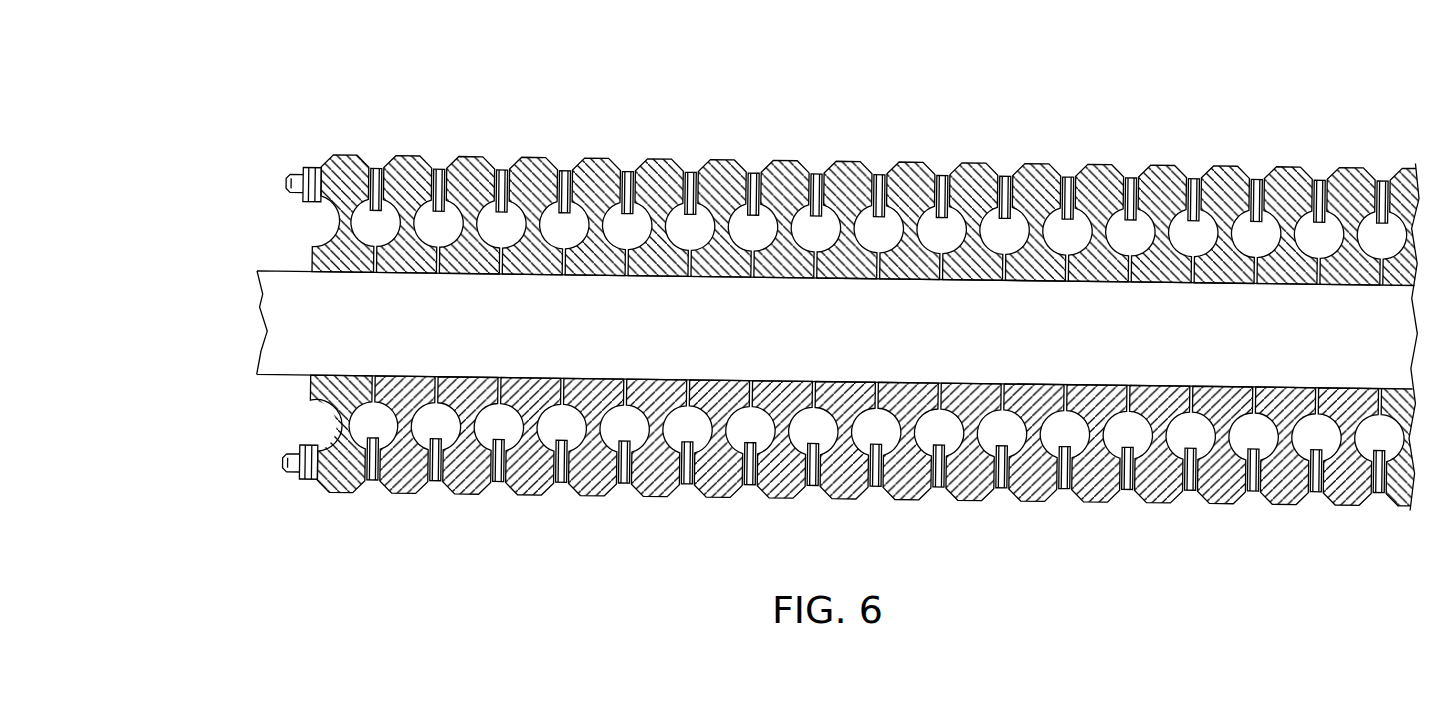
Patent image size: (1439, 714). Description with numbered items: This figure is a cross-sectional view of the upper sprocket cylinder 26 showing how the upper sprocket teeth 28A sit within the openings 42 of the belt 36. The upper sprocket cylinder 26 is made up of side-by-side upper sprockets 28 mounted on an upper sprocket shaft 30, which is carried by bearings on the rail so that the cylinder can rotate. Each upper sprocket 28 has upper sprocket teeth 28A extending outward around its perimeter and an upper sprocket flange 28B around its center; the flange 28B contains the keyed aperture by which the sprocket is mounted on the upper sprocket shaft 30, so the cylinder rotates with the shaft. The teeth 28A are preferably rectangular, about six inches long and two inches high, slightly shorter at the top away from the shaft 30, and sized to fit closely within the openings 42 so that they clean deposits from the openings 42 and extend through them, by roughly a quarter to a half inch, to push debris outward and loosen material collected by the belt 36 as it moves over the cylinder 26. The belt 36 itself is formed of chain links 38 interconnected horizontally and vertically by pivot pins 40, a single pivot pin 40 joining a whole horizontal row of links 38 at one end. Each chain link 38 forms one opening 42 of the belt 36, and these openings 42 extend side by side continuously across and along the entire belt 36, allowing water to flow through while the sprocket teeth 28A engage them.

The upper sprocket cylinder 26 is at (345, 157).
The pivot pin 40 is at (287, 175).
The upper sprocket 28 is at (320, 245).
The upper sprocket shaft 30 is at (310, 300).
The upper sprocket flange 28B is at (335, 391).
The belt 36 is at (312, 445).
The opening 42 is at (313, 483).
The upper sprocket tooth 28A is at (343, 483).
The chain link 38 is at (435, 483).